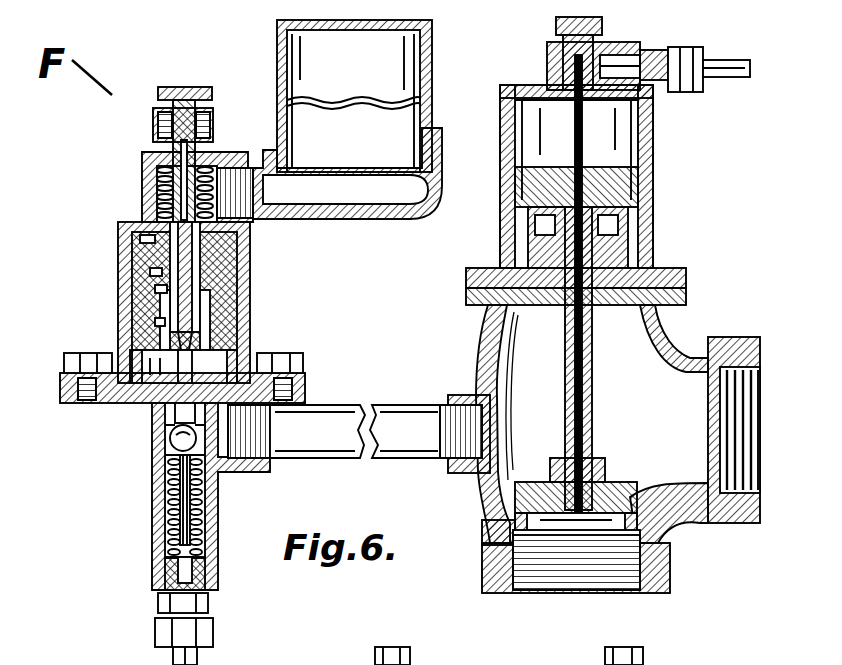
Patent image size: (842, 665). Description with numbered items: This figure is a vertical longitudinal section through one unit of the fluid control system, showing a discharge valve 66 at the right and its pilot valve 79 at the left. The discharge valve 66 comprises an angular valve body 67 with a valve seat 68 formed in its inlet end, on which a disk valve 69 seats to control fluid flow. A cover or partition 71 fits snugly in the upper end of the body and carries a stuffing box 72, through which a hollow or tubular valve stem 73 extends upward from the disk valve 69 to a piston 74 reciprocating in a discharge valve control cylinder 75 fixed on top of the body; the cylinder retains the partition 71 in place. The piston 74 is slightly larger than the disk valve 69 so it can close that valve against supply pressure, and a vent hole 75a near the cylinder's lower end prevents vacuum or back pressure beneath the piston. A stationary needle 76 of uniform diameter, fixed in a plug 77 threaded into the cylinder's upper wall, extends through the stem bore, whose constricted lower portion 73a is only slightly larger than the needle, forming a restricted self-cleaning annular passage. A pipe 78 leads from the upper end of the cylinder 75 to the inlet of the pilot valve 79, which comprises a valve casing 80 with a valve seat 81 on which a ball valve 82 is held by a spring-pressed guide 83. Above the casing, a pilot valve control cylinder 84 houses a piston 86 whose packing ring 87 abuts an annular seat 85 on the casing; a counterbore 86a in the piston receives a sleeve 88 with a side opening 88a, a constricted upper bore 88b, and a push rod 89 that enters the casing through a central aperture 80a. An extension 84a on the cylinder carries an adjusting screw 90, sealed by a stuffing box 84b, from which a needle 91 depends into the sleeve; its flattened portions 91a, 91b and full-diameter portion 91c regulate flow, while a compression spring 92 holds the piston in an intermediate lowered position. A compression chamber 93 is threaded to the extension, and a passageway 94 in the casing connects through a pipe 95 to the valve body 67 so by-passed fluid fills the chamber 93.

The discharge valve 66 is at (685, 530).
The angular valve body 67 is at (492, 492).
The valve seat 68 is at (637, 497).
The disk valve 69 is at (613, 478).
The cover or partition 71 is at (625, 302).
The stuffing box 72 is at (533, 322).
The hollow or tubular valve stem 73 is at (593, 395).
The constricted portion of valve stem bore 73a is at (550, 472).
The piston 74 is at (603, 178).
The discharge valve control cylinder 75 is at (652, 168).
The vent hole or aperture 75a is at (650, 242).
The stationary needle 76 is at (575, 127).
The plug 77 is at (556, 26).
The pipe or tube 78 is at (718, 67).
The pilot valve 79 is at (147, 507).
The valve casing 80 is at (158, 478).
The central aperture 80a is at (180, 405).
The valve seat 81 is at (153, 422).
The ball valve 82 is at (180, 440).
The spring-pressed guide 83 is at (205, 490).
The pilot valve control cylinder 84 is at (250, 291).
The extension 84a is at (142, 162).
The stuffing box 84b is at (212, 126).
The annular seat 85 is at (233, 362).
The piston 86 is at (225, 268).
The counterbore 86a is at (212, 312).
The packing or sealing ring 87 is at (183, 366).
The sleeve 88 is at (250, 243).
The opening 88a is at (155, 321).
The constricted portion of sleeve bore 88b is at (145, 218).
The push rod 89 is at (170, 362).
The adjusting screw 90 is at (183, 87).
The needle or stem 91 is at (255, 196).
The flattened portion 91a is at (140, 237).
The flattened portion 91b is at (155, 289).
The full-diameter portion 91c is at (150, 273).
The compression spring 92 is at (263, 207).
The compression chamber 93 is at (354, 96).
The passageway 94 is at (232, 415).
The pipe 95 is at (315, 447).